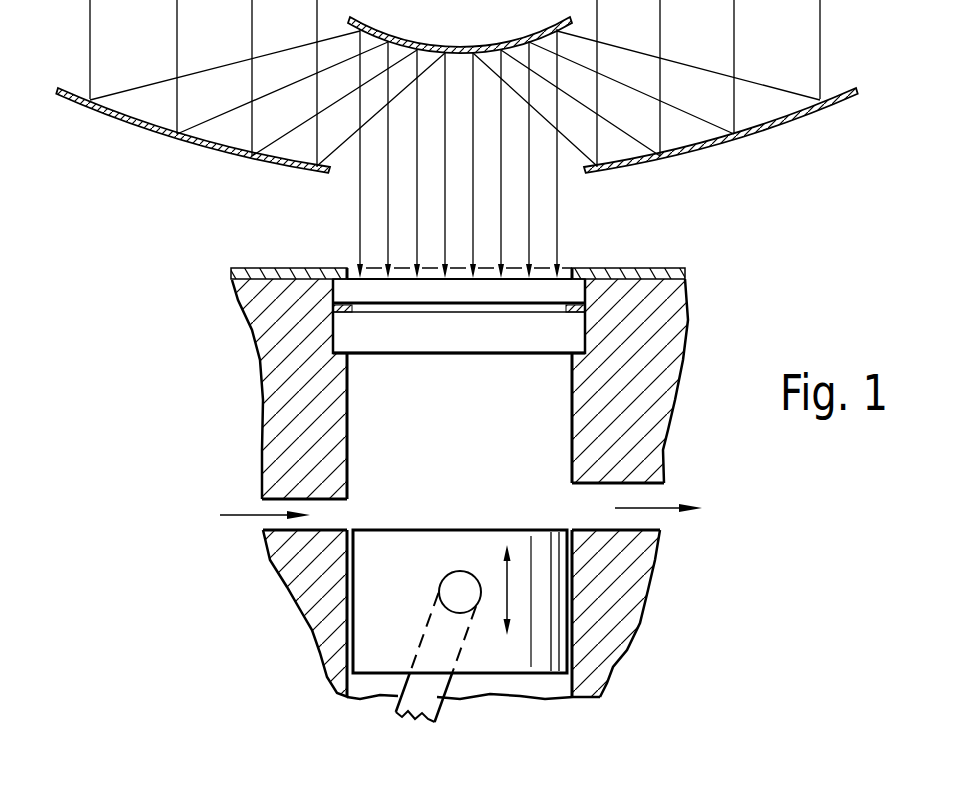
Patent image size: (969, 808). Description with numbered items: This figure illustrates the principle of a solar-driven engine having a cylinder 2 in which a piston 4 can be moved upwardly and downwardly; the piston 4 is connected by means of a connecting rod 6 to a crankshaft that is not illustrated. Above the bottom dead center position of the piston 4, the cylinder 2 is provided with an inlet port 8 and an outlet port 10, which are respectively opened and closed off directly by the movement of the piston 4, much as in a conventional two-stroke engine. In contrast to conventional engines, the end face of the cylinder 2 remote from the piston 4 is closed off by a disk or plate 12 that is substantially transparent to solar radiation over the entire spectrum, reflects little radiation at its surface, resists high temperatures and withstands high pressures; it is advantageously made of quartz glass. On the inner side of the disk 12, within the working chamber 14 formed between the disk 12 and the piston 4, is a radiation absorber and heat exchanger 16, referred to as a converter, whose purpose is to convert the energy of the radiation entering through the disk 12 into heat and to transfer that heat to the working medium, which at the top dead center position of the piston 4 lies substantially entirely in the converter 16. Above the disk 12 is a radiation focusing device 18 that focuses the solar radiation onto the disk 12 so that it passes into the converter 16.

The cylinder 2 is at (346, 401).
The piston 4 is at (377, 613).
The connecting rod 6 is at (427, 700).
The inlet port 8 is at (342, 517).
The outlet port 10 is at (580, 511).
The disk or plate 12 is at (568, 290).
The working chamber 14 is at (473, 437).
The radiation absorber and heat exchanger 16 is at (566, 334).
The radiation focusing device 18 is at (183, 203).